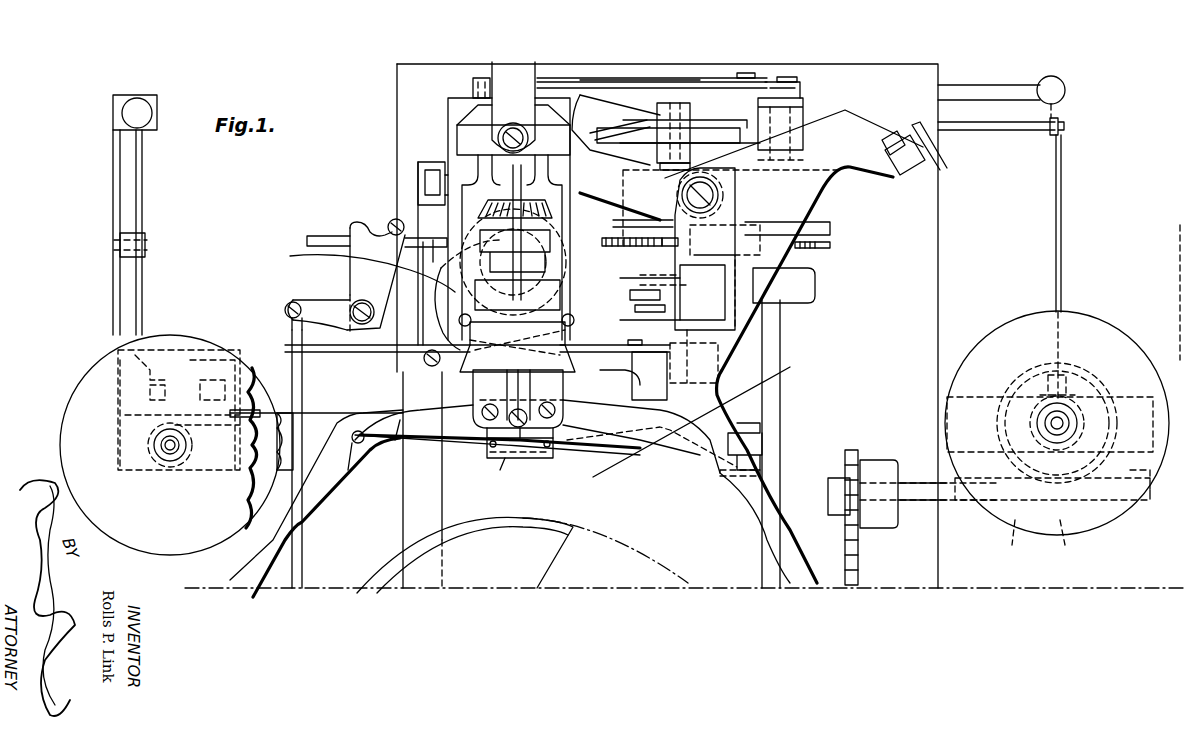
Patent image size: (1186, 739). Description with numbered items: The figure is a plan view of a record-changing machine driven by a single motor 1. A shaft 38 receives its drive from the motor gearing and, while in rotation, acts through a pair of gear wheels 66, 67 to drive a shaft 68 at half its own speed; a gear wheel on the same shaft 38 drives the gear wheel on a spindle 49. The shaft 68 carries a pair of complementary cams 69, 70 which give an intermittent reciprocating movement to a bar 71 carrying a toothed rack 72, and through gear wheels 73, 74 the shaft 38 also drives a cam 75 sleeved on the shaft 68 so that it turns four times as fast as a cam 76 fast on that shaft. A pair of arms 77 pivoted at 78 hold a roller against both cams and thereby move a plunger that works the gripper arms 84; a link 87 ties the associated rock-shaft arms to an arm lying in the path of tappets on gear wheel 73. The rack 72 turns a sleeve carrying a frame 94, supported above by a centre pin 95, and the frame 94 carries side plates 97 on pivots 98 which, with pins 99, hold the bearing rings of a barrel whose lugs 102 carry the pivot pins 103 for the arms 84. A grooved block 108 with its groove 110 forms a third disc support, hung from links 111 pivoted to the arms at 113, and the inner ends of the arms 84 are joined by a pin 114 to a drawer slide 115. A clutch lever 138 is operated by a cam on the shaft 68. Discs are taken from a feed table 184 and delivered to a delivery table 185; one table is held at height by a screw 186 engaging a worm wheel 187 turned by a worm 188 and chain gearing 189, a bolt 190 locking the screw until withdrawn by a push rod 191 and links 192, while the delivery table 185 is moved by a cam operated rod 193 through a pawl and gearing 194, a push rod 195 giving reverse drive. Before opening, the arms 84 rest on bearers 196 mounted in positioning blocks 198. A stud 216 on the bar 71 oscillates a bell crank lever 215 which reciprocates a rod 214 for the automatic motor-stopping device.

The motor 1 is at (605, 530).
The shaft 38 is at (780, 393).
The spindle 49 is at (688, 566).
The gear wheel 66 is at (830, 242).
The gear wheel 67 is at (665, 247).
The shaft 68 is at (680, 270).
The complementary cam 69 is at (617, 222).
The complementary cam 70 is at (625, 248).
The bar 71 is at (322, 236).
The toothed rack 72 is at (440, 182).
The gear wheel 73 is at (838, 175).
The gear wheel 74 is at (585, 200).
The cam 75 is at (660, 137).
The cam 76 is at (638, 138).
The arms 77 is at (592, 130).
The pivot 78 is at (797, 108).
The gripper arms 84 is at (292, 522).
The link 87 is at (735, 80).
The frame 94 is at (630, 292).
The centre pin 95 is at (505, 140).
The side plates 97 is at (482, 200).
The pivots 98 is at (360, 263).
The pins 99 is at (447, 322).
The lugs 102 is at (480, 398).
The pivot pins 103 is at (490, 447).
The block 108 is at (545, 460).
The groove 110 is at (490, 458).
The links 111 is at (375, 447).
The pivot 113 is at (357, 470).
The pin 114 is at (518, 460).
The drawer slide 115 is at (482, 400).
The clutch lever 138 is at (570, 360).
The feed table 184 is at (1070, 335).
The delivery table 185 is at (152, 505).
The screw 186 is at (1062, 420).
The worm wheel 187 is at (1066, 540).
The worm 188 is at (1014, 540).
The chain gearing 189 is at (858, 578).
The bolt 190 is at (1005, 412).
The push rod 191 is at (1062, 90).
The links 192 is at (1058, 115).
The cam operated rod 193 is at (248, 345).
The pawl and gearing 194 is at (220, 342).
The push rod 195 is at (123, 113).
The bearers 196 is at (772, 460).
The positioning blocks 198 is at (912, 180).
The rod 214 is at (302, 578).
The bell crank lever 215 is at (292, 256).
The stud 216 is at (392, 220).